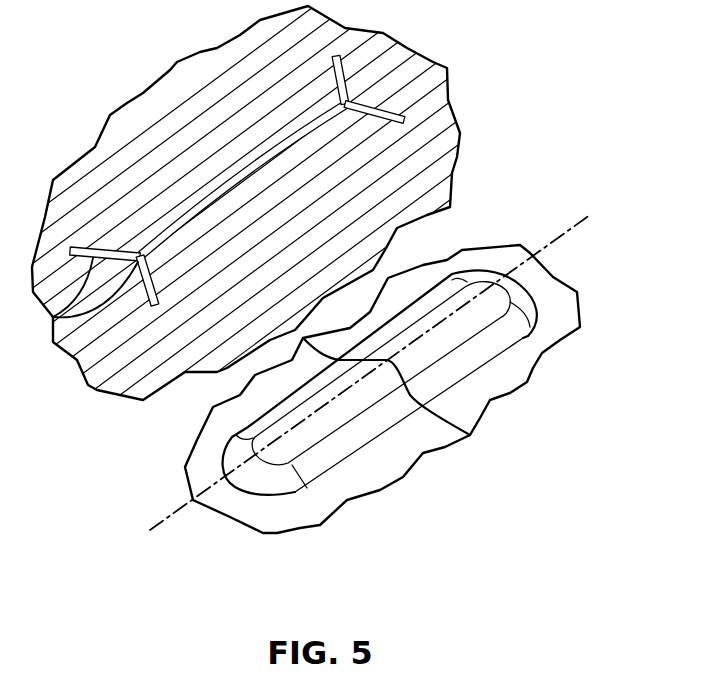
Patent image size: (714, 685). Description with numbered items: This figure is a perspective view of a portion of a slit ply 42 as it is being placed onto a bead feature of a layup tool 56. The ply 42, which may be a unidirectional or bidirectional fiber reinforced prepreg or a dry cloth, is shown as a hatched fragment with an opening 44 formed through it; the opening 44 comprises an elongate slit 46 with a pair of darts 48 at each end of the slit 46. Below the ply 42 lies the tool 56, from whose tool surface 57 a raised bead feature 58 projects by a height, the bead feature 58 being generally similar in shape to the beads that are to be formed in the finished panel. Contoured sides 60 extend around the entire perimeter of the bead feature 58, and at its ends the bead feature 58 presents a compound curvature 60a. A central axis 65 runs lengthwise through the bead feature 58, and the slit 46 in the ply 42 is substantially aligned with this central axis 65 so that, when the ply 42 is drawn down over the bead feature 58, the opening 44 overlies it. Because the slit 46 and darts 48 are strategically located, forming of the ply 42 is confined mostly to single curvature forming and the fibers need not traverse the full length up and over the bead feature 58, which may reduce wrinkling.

The ply 42 is at (97, 183).
The opening 44 is at (226, 117).
The elongate slit 46 is at (188, 213).
The dart 48 is at (53, 317).
The tool 56 is at (557, 308).
The tool surface 57 is at (362, 474).
The bead feature 58 is at (463, 394).
The contoured sides 60 is at (466, 348).
The compound curvature 60a is at (271, 468).
The central axis 65 is at (553, 241).